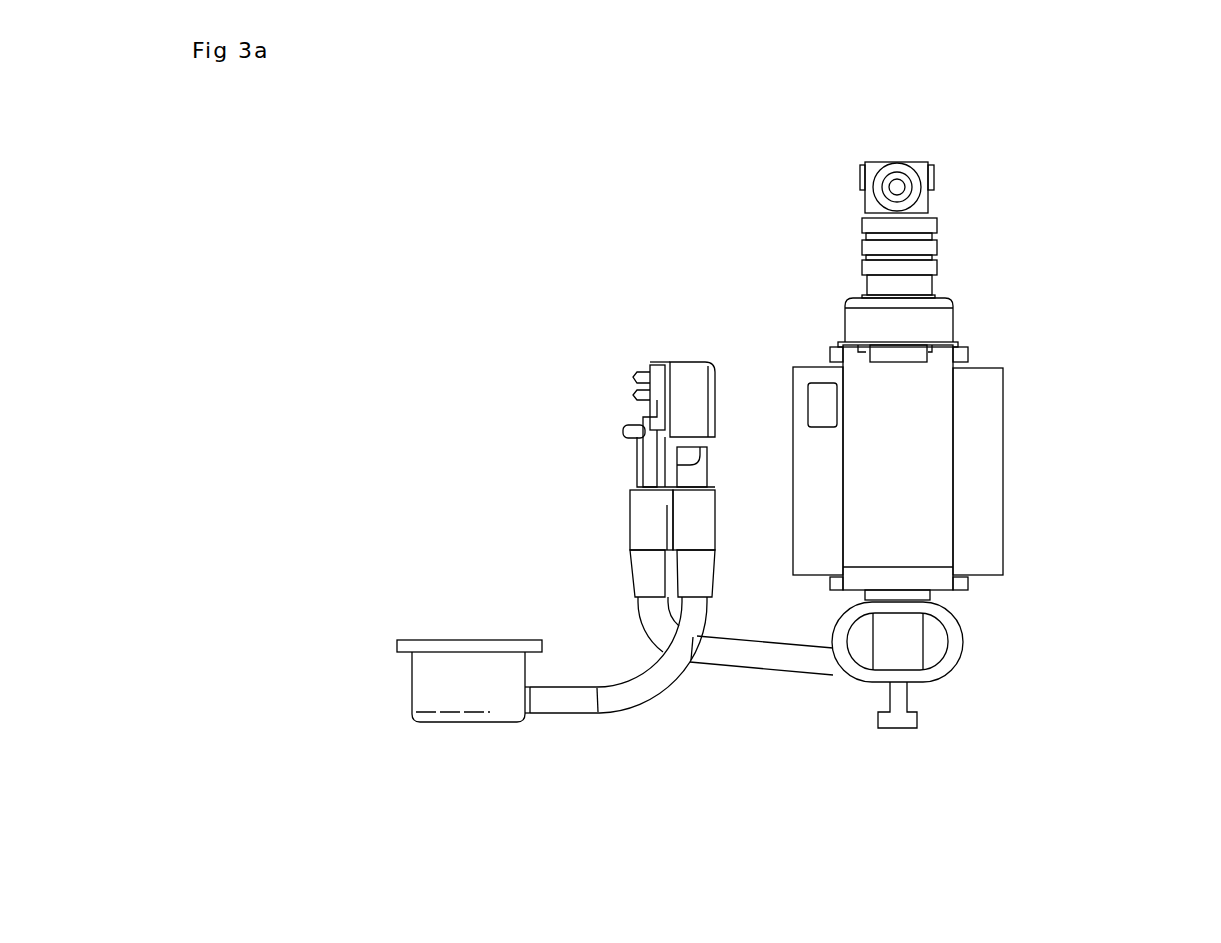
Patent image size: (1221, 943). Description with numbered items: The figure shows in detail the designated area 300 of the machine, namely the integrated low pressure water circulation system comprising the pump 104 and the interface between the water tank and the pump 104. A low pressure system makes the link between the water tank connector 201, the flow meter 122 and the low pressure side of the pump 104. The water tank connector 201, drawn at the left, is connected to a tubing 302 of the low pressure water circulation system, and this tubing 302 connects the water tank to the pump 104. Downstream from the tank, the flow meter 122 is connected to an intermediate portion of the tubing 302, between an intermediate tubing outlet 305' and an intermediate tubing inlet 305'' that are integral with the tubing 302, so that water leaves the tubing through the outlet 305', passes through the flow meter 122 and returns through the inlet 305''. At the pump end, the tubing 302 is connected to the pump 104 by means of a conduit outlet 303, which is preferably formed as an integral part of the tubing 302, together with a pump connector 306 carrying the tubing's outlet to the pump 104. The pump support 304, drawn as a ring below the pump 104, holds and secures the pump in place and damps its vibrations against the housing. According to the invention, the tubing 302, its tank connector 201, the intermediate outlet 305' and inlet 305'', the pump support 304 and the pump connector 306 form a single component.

The designated area 300 is at (729, 80).
The pump 104 is at (984, 557).
The flow meter 122 is at (665, 398).
The water tank connector 201 is at (445, 680).
The tubing 302 is at (596, 697).
The conduit outlet 303 is at (870, 657).
The pump support 304 is at (857, 668).
The intermediate tubing outlet 305' is at (728, 543).
The intermediate tubing inlet 305'' is at (611, 543).
The pump connector 306 is at (902, 647).